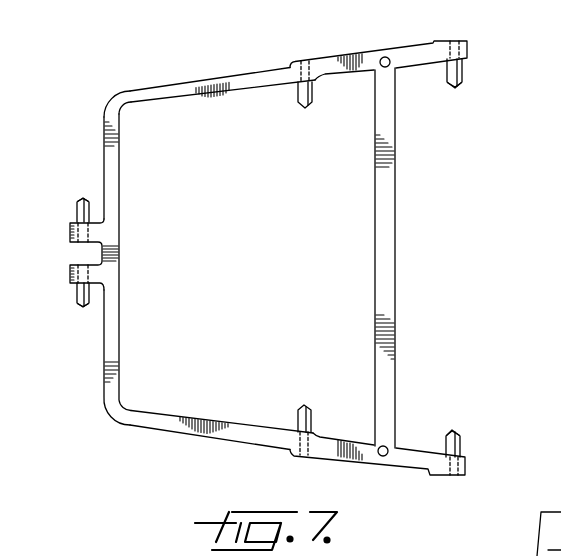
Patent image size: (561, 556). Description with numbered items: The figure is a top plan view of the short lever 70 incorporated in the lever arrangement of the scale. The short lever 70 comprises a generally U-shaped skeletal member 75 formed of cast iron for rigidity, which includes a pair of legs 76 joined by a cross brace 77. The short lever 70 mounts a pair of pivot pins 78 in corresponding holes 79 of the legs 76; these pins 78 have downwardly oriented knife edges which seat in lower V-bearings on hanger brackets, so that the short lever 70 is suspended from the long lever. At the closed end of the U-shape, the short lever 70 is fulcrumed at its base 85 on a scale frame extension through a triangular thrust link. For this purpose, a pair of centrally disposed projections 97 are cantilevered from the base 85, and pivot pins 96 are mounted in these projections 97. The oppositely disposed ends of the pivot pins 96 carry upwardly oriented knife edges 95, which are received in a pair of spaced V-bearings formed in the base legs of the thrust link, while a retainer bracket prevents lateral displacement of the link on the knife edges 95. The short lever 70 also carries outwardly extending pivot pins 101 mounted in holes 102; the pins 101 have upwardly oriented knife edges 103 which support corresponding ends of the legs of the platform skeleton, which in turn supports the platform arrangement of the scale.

The short lever 70 is at (201, 73).
The skeletal member 75 is at (158, 430).
The legs 76 is at (364, 57).
The cross brace 77 is at (396, 302).
The pivot pins 78 is at (297, 100).
The holes 79 is at (307, 58).
The base 85 is at (120, 175).
The knife edges 95 is at (80, 204).
The pivot pins 96 is at (77, 212).
The projections 97 is at (68, 229).
The pivot pins 101 is at (464, 66).
The holes 102 is at (453, 43).
The knife edges 103 is at (461, 84).